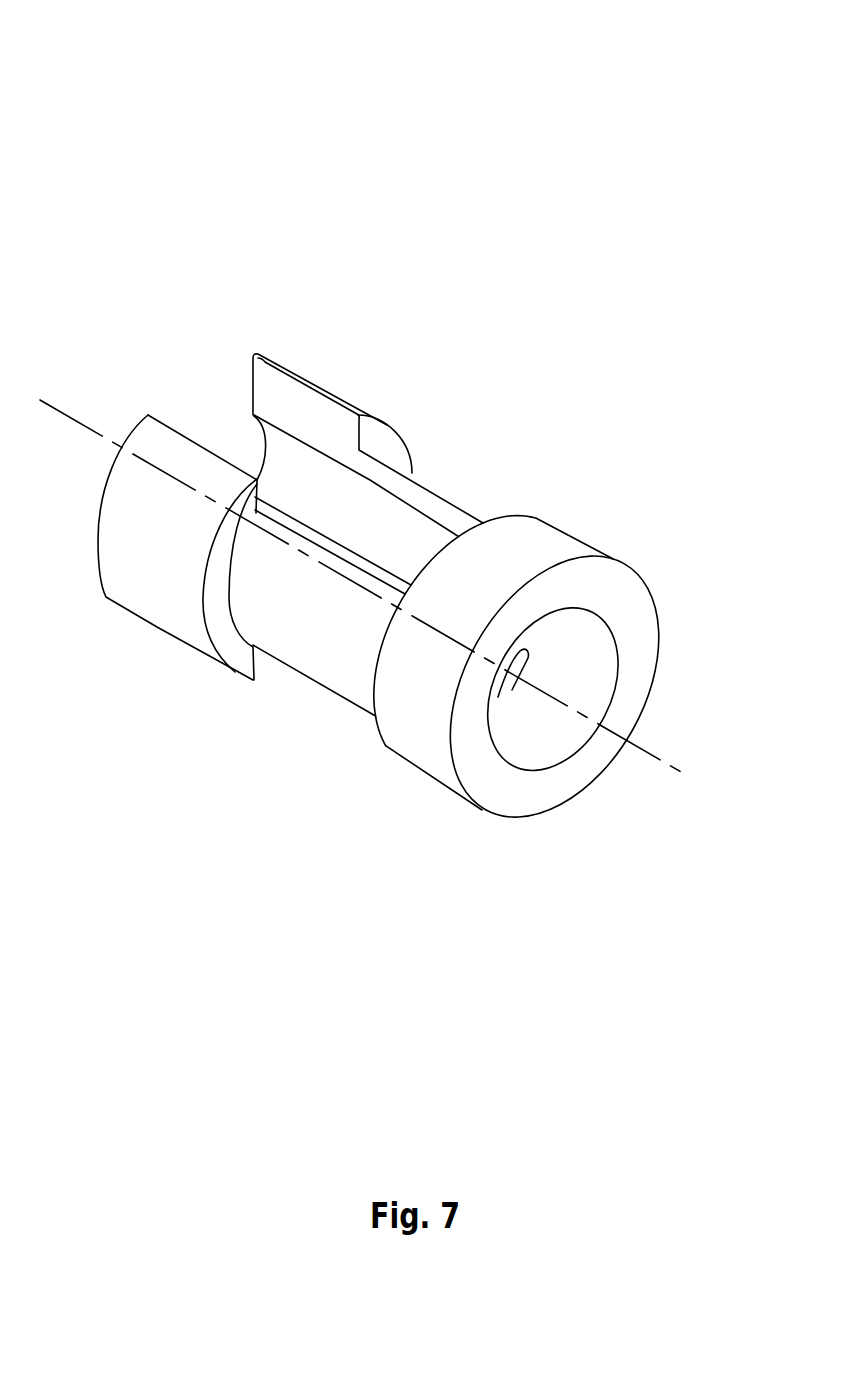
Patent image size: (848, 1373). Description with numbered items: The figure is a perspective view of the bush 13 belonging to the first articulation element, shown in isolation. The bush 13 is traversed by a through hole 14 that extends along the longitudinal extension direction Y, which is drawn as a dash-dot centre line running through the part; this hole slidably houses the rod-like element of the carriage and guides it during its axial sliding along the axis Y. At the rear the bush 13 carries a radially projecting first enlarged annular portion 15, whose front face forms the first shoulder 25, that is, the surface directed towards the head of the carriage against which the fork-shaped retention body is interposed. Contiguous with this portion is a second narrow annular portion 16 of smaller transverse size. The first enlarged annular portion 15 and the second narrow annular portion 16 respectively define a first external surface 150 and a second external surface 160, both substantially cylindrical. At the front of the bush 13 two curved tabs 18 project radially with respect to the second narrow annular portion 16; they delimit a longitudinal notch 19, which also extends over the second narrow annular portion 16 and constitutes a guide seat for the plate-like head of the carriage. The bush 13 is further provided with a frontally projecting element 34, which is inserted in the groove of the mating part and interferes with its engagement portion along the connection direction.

The bush 13 is at (205, 148).
The through hole 14 is at (520, 715).
The first enlarged annular portion 15 is at (537, 557).
The second narrow annular portion 16 is at (445, 482).
The curved tabs 18 is at (153, 440).
The longitudinal notch 19 is at (352, 535).
The first shoulder 25 is at (522, 510).
The frontally projecting element 34 is at (373, 767).
The first external surface 150 is at (487, 608).
The second external surface 160 is at (332, 625).
The longitudinal extension direction Y is at (378, 593).